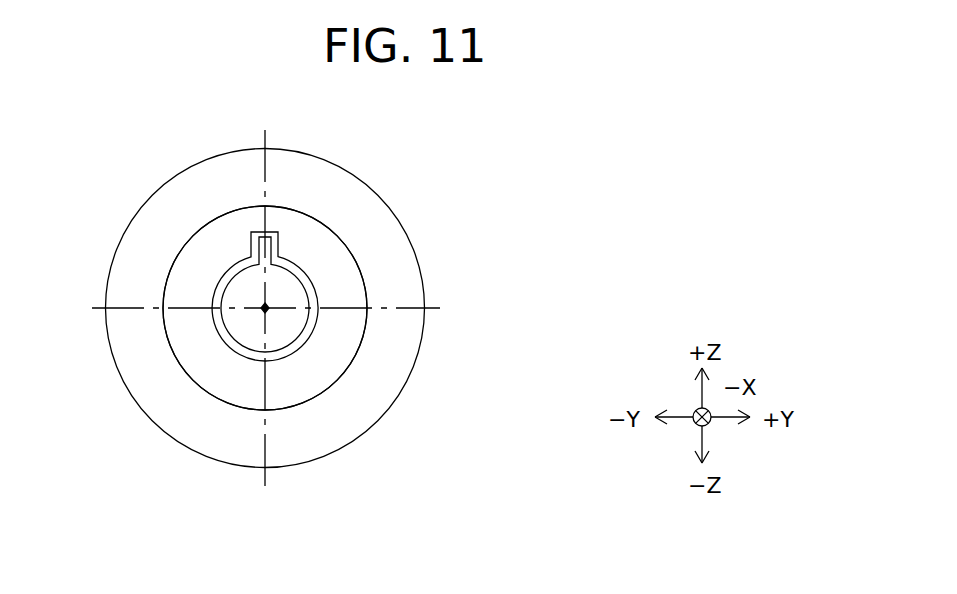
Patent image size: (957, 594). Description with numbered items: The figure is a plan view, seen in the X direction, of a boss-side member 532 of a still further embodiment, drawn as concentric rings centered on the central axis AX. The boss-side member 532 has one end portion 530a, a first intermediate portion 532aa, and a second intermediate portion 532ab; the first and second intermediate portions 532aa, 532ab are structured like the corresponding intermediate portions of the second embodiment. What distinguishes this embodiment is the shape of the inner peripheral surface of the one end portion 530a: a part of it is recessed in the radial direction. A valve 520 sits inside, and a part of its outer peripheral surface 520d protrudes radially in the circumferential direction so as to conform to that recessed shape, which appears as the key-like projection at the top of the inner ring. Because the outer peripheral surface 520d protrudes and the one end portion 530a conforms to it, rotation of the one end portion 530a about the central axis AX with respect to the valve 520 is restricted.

The boss-side member 532 is at (335, 300).
The second intermediate portion 532ab is at (398, 321).
The first intermediate portion 532aa is at (363, 337).
The one end portion 530a is at (328, 357).
The valve 520 is at (177, 256).
The outer peripheral surface 520d is at (224, 278).
The central axis AX is at (266, 309).